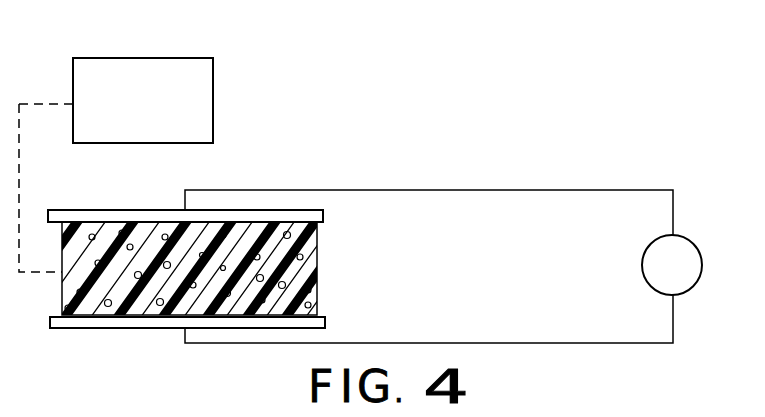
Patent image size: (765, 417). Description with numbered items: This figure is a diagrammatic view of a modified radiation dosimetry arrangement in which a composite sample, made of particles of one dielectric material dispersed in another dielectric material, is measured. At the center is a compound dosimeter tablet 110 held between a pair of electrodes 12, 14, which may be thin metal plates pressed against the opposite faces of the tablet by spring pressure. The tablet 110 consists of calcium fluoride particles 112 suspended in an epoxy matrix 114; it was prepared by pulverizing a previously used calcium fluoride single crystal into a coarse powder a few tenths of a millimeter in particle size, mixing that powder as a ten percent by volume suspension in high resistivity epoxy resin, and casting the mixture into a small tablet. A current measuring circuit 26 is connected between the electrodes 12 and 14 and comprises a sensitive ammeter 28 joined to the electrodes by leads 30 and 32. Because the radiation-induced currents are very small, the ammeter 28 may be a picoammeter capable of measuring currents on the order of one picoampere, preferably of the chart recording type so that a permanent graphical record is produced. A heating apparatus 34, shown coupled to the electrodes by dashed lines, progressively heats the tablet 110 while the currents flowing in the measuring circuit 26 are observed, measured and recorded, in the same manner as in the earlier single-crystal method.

The electrode 12 is at (113, 218).
The electrode 14 is at (133, 320).
The current measuring circuit 26 is at (465, 250).
The ammeter 28 is at (700, 256).
The lead 30 is at (492, 186).
The lead 32 is at (588, 345).
The heating apparatus 34 is at (143, 60).
The compound dosimeter tablet 110 is at (295, 269).
The calcium fluoride particles 112 is at (313, 310).
The epoxy matrix 114 is at (315, 231).